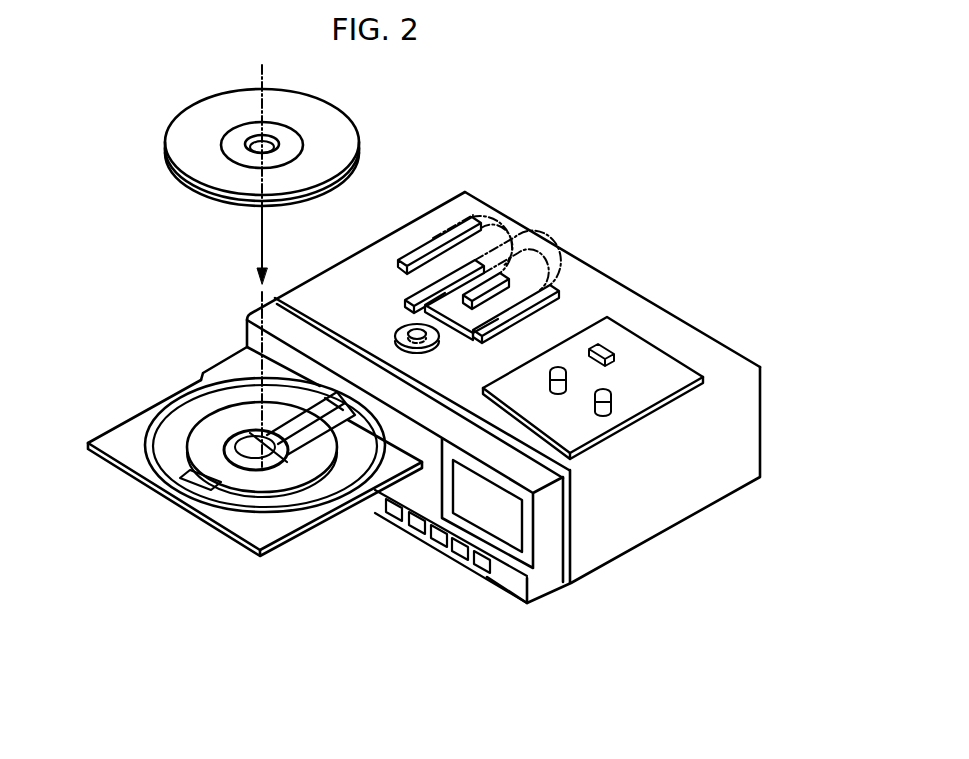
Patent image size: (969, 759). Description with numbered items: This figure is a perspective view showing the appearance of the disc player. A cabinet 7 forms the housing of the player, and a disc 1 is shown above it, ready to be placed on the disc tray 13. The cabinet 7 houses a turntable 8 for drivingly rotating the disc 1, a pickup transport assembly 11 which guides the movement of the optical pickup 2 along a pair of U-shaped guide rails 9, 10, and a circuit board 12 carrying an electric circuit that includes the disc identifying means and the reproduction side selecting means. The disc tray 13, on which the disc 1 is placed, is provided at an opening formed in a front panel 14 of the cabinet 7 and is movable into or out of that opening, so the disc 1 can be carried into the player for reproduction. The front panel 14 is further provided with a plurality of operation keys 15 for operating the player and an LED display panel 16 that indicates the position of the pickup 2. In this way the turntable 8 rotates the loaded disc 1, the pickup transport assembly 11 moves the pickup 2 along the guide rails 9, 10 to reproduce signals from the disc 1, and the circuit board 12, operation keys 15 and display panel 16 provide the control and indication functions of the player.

The disc 1 is at (324, 122).
The optical pickup 2 is at (468, 294).
The cabinet 7 is at (598, 293).
The turntable 8 is at (405, 336).
The U-shaped guide rail 9 is at (420, 245).
The U-shaped guide rail 10 is at (587, 236).
The pickup transport assembly 11 is at (511, 225).
The circuit board 12 is at (636, 322).
The disc tray 13 is at (125, 438).
The front panel 14 is at (432, 492).
The operation keys 15 is at (442, 547).
The LED display panel 16 is at (492, 527).